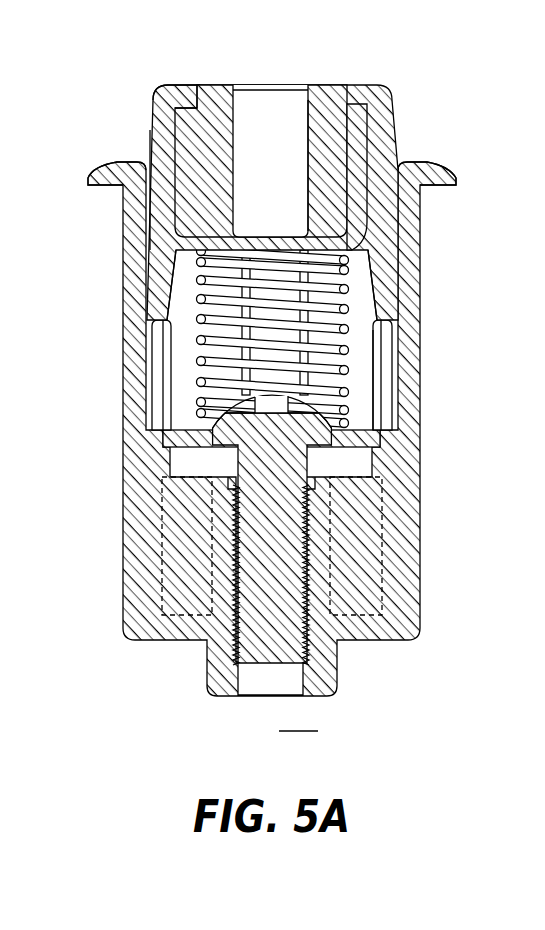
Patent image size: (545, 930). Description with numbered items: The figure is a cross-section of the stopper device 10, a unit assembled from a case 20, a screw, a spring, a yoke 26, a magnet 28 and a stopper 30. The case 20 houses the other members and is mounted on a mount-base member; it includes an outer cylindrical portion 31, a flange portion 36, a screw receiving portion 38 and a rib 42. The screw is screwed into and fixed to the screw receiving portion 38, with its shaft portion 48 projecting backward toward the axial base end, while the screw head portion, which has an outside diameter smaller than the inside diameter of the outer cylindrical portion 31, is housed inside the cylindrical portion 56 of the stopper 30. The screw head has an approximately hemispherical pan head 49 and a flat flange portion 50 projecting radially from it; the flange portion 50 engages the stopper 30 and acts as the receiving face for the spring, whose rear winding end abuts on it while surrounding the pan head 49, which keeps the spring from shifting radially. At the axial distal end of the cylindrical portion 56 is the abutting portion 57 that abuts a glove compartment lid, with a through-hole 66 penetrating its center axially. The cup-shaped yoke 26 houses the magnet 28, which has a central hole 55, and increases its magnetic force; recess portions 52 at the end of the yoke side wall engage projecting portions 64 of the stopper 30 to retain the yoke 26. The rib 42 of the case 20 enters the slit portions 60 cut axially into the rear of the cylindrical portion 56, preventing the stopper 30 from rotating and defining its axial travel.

The stopper device 10 is at (298, 716).
The case 20 is at (406, 523).
The yoke 26 is at (358, 124).
The magnet 28 is at (252, 129).
The stopper 30 is at (274, 176).
The outer cylindrical portion 31 is at (146, 337).
The flange portion 36 is at (100, 176).
The screw receiving portion 38 is at (318, 590).
The rib 42 is at (370, 552).
The shaft portion 48 is at (270, 535).
The pan head 49 is at (226, 402).
The flange portion 50 is at (185, 437).
The recess portions 52 is at (178, 112).
The central hole 55 is at (312, 158).
The cylindrical portion 56 is at (385, 250).
The abutting portion 57 is at (160, 86).
The slit portions 60 is at (383, 350).
The projecting portions 64 is at (182, 108).
The through-hole 66 is at (366, 132).